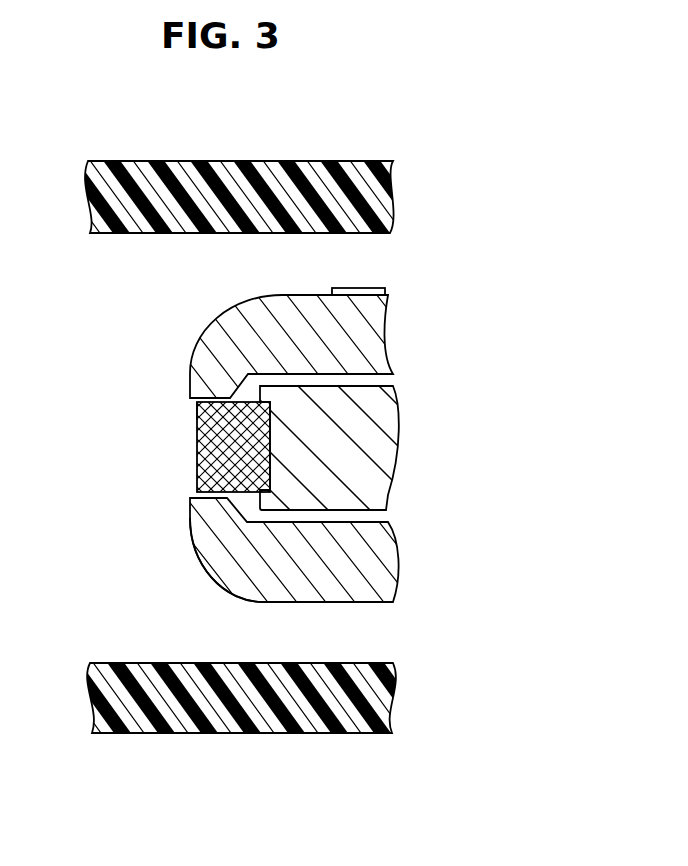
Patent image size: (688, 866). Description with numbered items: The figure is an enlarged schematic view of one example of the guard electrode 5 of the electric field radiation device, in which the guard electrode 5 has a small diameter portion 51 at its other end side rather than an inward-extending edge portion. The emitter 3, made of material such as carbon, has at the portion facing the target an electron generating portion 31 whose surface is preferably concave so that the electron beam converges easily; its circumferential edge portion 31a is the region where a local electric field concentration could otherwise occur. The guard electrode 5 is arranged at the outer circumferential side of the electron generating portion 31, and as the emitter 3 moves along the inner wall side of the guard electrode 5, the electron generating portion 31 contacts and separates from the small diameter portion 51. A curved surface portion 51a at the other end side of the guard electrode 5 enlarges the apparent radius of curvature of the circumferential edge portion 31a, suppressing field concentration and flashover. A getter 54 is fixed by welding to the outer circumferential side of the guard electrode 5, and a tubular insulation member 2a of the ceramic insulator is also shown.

The tubular insulation member 2a is at (121, 717).
The emitter 3 is at (190, 480).
The guard electrode 5 is at (285, 518).
The electron generating portion 31 is at (197, 443).
The circumferential edge portion 31a is at (190, 406).
The small diameter portion 51 is at (200, 512).
The curved surface portion 51a is at (205, 545).
The getter 54 is at (357, 290).